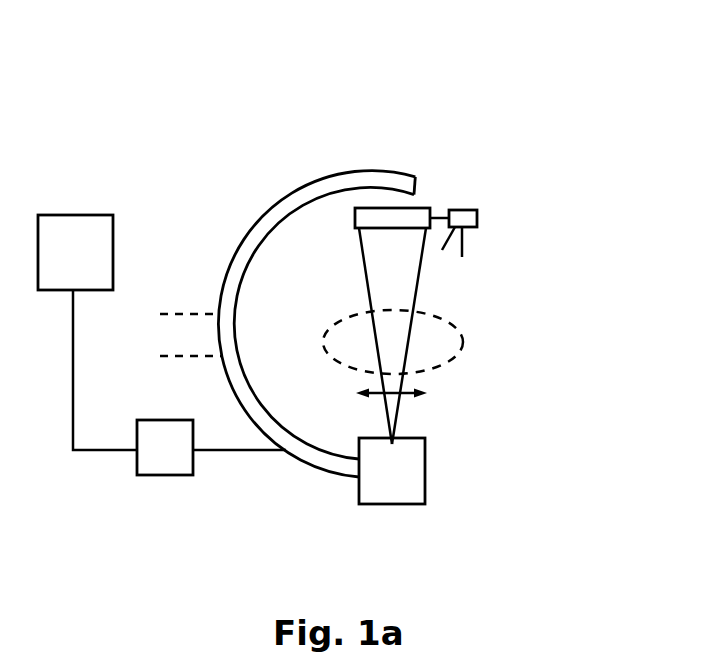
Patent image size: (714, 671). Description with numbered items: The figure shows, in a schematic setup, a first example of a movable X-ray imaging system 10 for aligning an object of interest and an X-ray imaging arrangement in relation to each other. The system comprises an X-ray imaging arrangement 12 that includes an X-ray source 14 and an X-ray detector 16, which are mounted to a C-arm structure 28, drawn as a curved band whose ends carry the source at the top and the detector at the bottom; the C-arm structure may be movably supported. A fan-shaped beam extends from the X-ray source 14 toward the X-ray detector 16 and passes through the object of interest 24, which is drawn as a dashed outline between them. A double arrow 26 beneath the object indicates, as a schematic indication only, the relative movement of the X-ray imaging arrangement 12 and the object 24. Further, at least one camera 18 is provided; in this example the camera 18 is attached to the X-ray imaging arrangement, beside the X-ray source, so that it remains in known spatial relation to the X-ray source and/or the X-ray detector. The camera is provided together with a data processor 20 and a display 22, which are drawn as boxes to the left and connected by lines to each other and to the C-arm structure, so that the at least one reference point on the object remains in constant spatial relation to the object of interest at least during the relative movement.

The movable X-ray imaging system 10 is at (533, 119).
The X-ray imaging arrangement 12 is at (316, 180).
The X-ray source 14 is at (417, 487).
The X-ray detector 16 is at (423, 209).
The camera 18 is at (472, 217).
The data processor 20 is at (165, 431).
The display 22 is at (88, 226).
The object of interest 24 is at (458, 330).
The double arrow 26 is at (402, 398).
The C-arm structure 28 is at (253, 246).